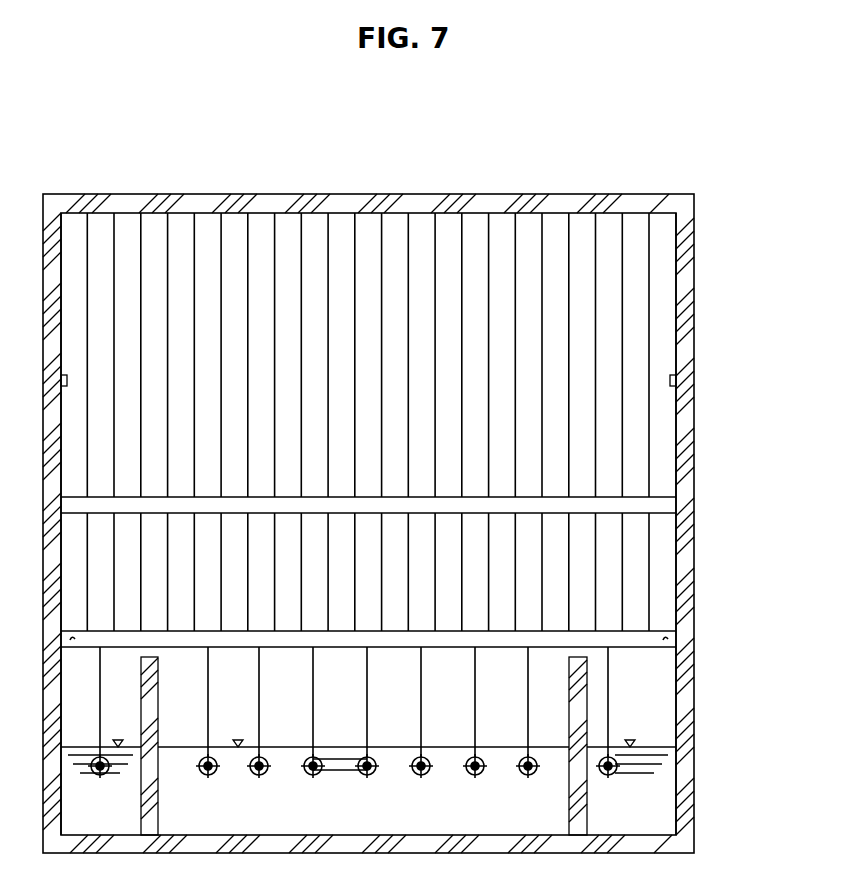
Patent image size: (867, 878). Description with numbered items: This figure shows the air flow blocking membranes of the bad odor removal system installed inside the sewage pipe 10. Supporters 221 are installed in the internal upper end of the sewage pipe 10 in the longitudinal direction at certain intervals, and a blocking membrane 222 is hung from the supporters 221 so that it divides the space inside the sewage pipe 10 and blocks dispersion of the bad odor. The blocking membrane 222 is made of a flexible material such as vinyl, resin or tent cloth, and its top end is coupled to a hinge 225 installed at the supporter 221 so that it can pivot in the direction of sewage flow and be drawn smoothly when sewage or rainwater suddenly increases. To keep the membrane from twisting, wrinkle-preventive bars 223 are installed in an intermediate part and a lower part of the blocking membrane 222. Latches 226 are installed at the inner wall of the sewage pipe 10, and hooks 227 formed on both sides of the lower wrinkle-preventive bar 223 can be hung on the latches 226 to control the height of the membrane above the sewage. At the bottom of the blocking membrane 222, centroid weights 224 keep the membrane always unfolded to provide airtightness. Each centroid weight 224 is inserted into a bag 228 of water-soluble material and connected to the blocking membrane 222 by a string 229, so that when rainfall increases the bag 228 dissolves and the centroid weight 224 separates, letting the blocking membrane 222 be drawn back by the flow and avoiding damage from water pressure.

The sewage pipe 10 is at (561, 200).
The supporters 221 is at (326, 212).
The blocking membrane 222 is at (662, 292).
The wrinkle-preventive bars 223 is at (660, 505).
The centroid weights 224 is at (445, 772).
The hinge 225 is at (345, 212).
The latches 226 is at (676, 378).
The hooks 227 is at (664, 641).
The bag 228 is at (411, 771).
The string 229 is at (423, 702).